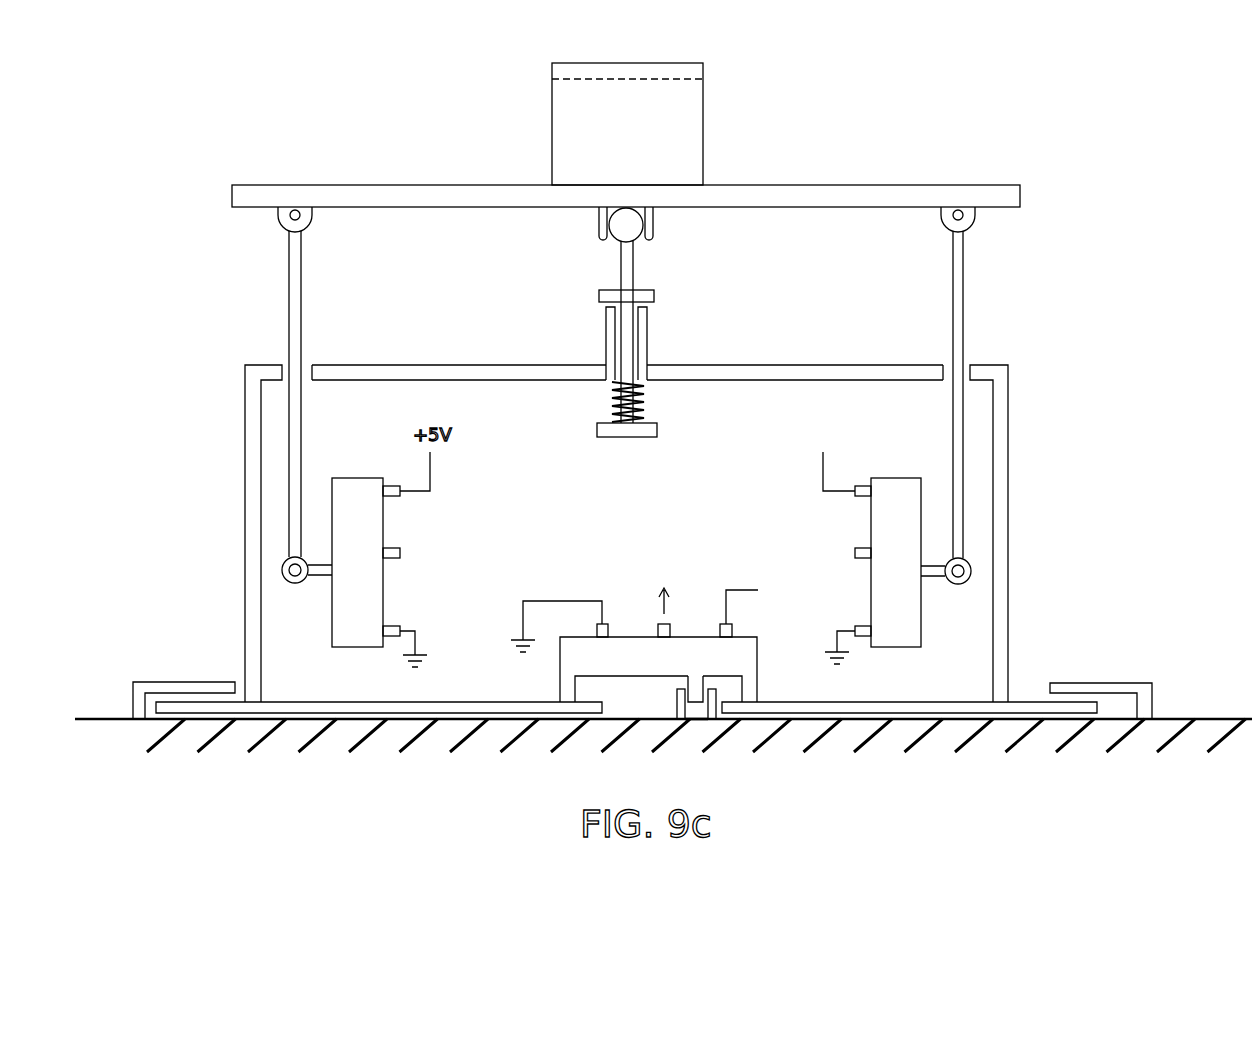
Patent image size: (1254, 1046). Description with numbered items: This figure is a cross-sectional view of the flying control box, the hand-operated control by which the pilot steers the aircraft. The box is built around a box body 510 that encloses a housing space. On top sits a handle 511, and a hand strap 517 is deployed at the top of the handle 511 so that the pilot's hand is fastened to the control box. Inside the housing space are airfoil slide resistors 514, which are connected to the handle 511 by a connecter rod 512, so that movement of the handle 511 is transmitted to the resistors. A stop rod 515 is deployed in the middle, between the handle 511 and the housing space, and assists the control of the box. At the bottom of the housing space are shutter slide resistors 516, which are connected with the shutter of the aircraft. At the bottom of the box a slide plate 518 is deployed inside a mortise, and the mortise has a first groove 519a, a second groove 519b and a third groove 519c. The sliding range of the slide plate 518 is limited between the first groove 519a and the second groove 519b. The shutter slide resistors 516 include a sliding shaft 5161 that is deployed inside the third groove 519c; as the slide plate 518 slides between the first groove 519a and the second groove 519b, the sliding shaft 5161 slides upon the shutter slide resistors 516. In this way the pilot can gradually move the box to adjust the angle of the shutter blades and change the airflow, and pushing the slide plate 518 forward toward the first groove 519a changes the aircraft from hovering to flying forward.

The box body 510 is at (1008, 462).
The handle 511 is at (1003, 185).
The connecter rod 512 is at (963, 278).
The airfoil slide resistors 514 is at (895, 520).
The stop rod 515 is at (633, 265).
The shutter slide resistors 516 is at (632, 640).
The sliding shaft 5161 is at (695, 690).
The hand strap 517 is at (552, 105).
The slide plate 518 is at (903, 700).
The first groove 519a is at (188, 685).
The second groove 519b is at (1103, 688).
The third groove 519c is at (696, 712).